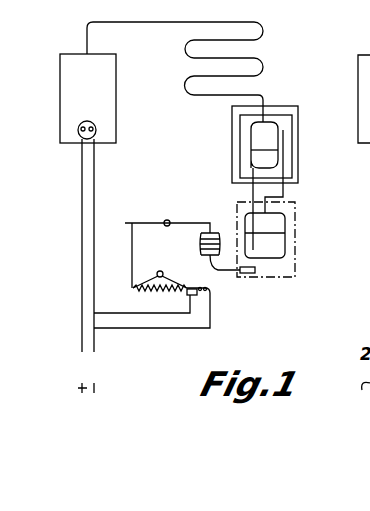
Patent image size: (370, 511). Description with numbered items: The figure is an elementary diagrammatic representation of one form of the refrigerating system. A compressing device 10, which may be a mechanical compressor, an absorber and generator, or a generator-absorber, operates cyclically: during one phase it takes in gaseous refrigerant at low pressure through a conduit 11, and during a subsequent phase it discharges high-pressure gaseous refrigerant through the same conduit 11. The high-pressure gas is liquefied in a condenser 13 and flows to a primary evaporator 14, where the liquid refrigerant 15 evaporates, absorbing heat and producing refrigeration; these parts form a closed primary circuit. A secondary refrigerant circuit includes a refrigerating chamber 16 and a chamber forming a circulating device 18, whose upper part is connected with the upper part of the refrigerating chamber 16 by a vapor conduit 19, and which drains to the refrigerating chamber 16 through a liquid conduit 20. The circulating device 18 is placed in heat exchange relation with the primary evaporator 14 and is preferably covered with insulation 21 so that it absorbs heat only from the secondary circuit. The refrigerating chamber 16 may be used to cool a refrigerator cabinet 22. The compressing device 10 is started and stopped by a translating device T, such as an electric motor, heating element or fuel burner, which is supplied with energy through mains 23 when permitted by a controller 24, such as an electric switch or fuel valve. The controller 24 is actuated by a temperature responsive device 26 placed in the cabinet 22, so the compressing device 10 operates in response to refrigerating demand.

The compressing device 10 is at (88, 98).
The conduit 11 is at (160, 30).
The condenser 13 is at (263, 62).
The primary evaporator 14 is at (268, 130).
The liquid refrigerant 15 is at (258, 155).
The refrigerating chamber 16 is at (276, 243).
The circulating device 18 is at (288, 163).
The vapor conduit 19 is at (285, 195).
The liquid conduit 20 is at (250, 193).
The insulation 21 is at (298, 128).
The refrigerator cabinet 22 is at (295, 277).
The mains 23 is at (84, 352).
The controller 24 is at (170, 291).
The temperature responsive device 26 is at (255, 278).
The translating device T is at (79, 126).